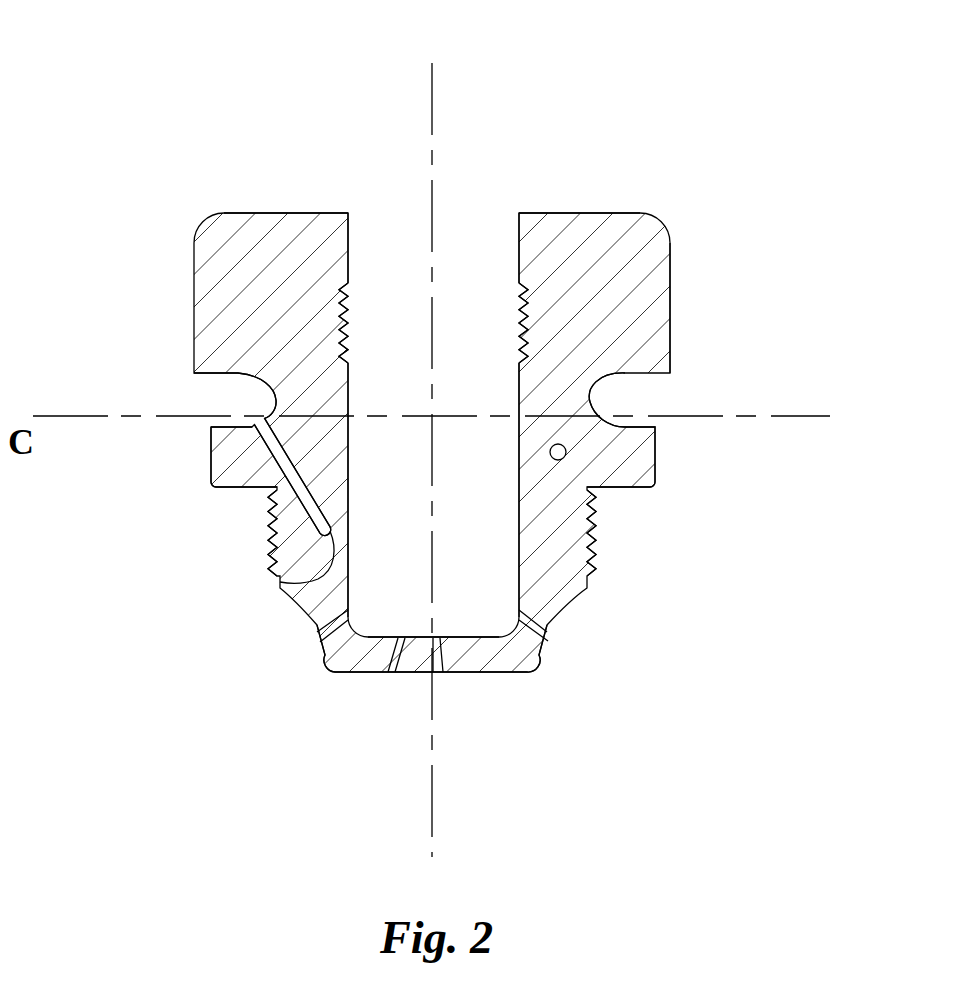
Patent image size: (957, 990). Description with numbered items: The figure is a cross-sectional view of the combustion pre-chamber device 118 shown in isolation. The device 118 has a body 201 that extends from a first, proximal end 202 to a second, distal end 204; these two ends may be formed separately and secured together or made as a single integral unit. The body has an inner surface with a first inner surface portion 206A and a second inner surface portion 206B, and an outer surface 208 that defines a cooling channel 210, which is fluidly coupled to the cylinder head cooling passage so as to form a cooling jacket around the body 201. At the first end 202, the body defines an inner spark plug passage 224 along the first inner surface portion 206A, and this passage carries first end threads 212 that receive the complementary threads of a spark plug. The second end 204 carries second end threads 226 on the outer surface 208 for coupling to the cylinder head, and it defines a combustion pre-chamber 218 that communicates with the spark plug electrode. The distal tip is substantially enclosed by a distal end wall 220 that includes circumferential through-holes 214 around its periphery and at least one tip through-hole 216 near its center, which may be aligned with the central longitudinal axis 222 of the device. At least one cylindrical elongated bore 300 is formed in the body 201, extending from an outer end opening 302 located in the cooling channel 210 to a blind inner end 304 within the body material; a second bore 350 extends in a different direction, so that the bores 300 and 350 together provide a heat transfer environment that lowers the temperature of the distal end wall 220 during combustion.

The combustion pre-chamber device 118 is at (112, 107).
The body 201 is at (675, 262).
The first end 202 is at (364, 88).
The second end 204 is at (322, 797).
The first inner surface portion 206A is at (356, 392).
The second inner surface portion 206B is at (510, 568).
The outer surface 208 is at (193, 462).
The cooling channel 210 is at (200, 401).
The first end threads 212 is at (519, 310).
The circumferential through-holes 214 is at (313, 637).
The tip through-hole 216 is at (390, 673).
The combustion pre-chamber 218 is at (386, 587).
The distal end wall 220 is at (328, 668).
The central longitudinal axis 222 is at (433, 823).
The inner spark plug passage 224 is at (488, 208).
The second end threads 226 is at (590, 560).
The bore 300 is at (288, 468).
The outer end opening 302 is at (254, 416).
The closed inner end 304 is at (280, 582).
The second bore 350 is at (566, 449).